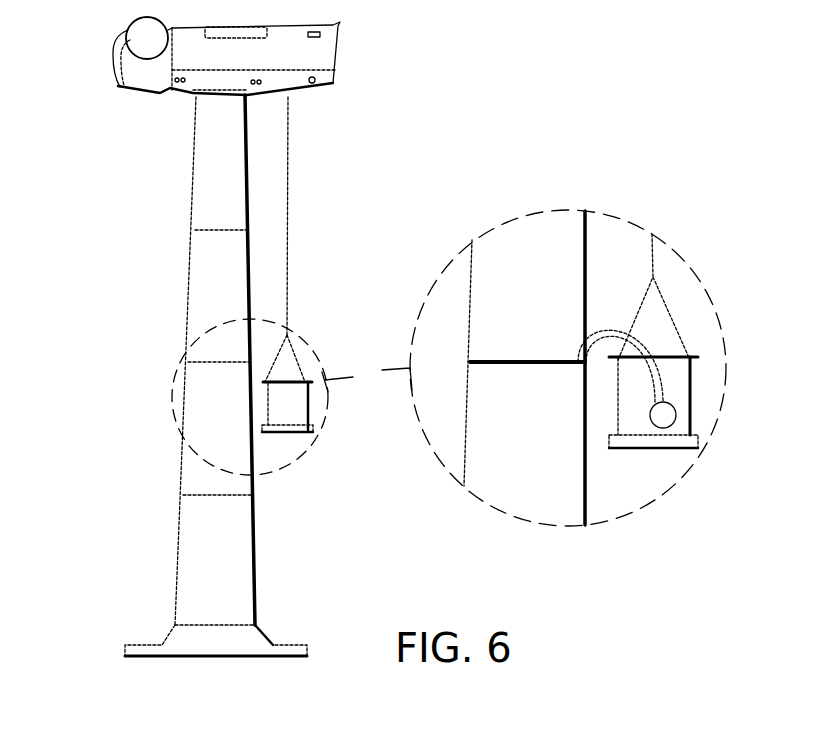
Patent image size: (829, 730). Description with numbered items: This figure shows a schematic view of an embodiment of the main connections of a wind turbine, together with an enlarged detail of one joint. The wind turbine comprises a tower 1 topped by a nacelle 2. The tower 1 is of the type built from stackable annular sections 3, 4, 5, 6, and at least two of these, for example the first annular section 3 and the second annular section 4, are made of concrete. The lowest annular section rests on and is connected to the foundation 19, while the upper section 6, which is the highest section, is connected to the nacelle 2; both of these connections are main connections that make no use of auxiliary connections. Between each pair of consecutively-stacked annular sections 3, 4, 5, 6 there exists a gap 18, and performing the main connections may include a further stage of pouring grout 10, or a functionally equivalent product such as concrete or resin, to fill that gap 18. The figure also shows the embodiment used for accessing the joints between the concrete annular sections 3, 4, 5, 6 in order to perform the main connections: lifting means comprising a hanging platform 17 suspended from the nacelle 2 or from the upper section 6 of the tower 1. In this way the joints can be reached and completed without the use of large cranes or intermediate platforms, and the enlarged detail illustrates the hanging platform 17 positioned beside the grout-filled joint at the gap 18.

The tower 1 is at (152, 352).
The nacelle 2 is at (129, 99).
The first annular section 3 is at (222, 538).
The second annular section 4 is at (210, 403).
The annular section 5 is at (212, 252).
The upper section 6 is at (199, 193).
The grout 10 is at (500, 363).
The hanging platform 17 is at (302, 368).
The gap 18 is at (537, 360).
The foundation 19 is at (252, 645).